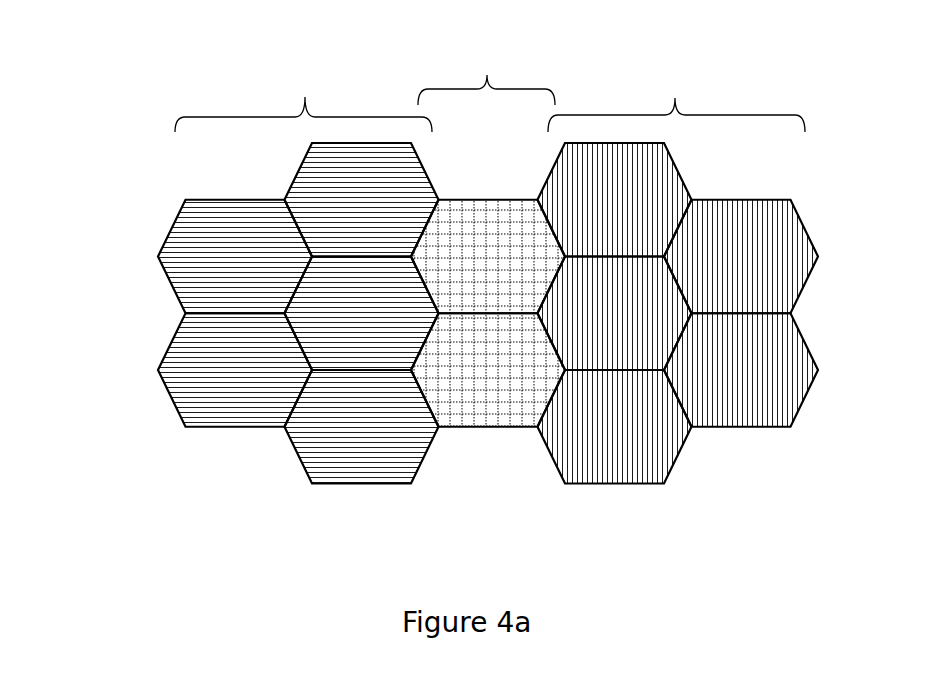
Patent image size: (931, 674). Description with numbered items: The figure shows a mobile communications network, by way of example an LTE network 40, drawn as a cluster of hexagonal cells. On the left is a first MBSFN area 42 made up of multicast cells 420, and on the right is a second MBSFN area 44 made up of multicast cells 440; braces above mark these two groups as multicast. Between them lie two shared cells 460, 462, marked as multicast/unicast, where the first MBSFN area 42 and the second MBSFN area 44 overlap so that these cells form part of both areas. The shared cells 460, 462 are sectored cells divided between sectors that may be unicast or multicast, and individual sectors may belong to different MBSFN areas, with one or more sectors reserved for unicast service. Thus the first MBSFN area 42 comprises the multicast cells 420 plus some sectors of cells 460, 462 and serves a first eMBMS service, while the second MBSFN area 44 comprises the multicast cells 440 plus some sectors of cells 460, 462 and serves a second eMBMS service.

The LTE network 40 is at (128, 117).
The first MBSFN area 42 is at (298, 372).
The second MBSFN area 44 is at (678, 381).
The cells 420 is at (298, 313).
The cells 440 is at (678, 313).
The shared cell 460 is at (488, 257).
The shared cell 462 is at (488, 370).